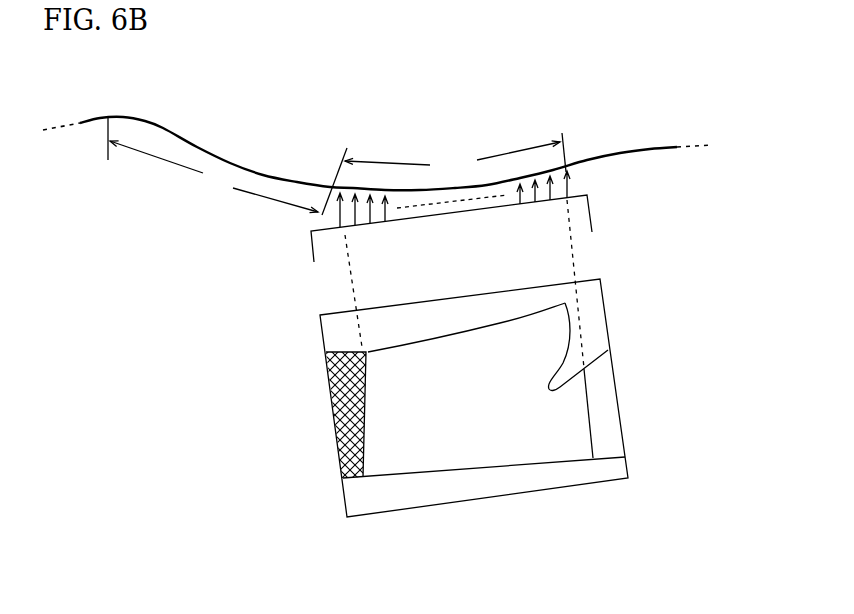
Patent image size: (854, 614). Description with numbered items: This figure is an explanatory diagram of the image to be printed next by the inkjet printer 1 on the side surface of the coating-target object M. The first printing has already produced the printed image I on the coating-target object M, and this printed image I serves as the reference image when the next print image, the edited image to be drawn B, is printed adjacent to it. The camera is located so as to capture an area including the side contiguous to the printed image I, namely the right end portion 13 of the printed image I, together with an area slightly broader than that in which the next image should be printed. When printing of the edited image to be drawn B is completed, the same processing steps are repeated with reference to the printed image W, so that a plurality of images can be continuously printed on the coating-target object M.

The inkjet printer 1 is at (600, 217).
The right end portion 13 is at (330, 410).
The edited image to be drawn B is at (483, 447).
The coating-target object M is at (632, 145).
The printed image I is at (213, 165).
The printed image W is at (444, 174).